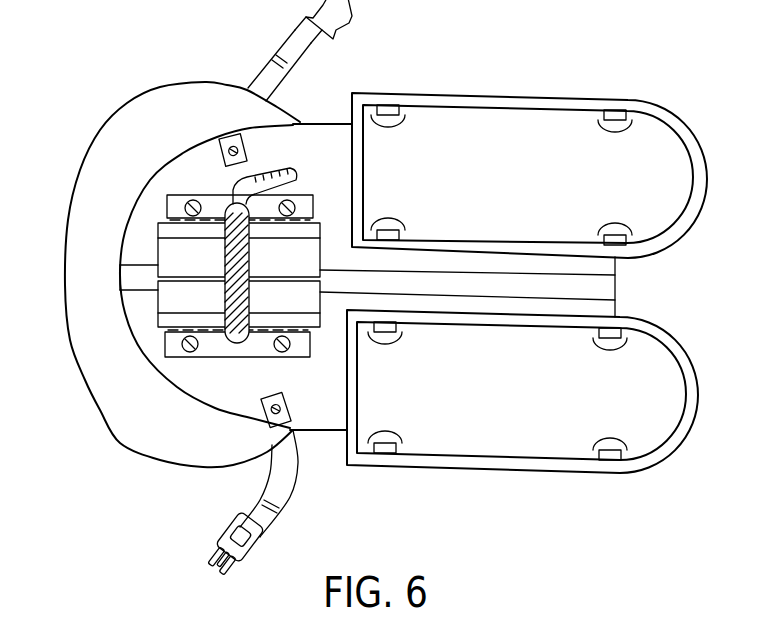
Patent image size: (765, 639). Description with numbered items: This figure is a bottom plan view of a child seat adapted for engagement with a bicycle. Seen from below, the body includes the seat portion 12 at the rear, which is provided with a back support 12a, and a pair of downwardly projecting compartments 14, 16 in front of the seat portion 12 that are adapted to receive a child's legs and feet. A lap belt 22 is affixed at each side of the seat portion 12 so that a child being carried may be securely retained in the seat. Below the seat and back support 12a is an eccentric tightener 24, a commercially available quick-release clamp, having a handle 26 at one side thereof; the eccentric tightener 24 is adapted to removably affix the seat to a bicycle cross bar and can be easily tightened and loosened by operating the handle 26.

The seat portion 12 is at (327, 392).
The back support 12a is at (153, 163).
The downwardly projecting compartment 14 is at (500, 403).
The downwardly projecting compartment 16 is at (510, 189).
The lap belt 22 is at (259, 68).
The eccentric tightener 24 is at (225, 292).
The handle 26 is at (285, 160).